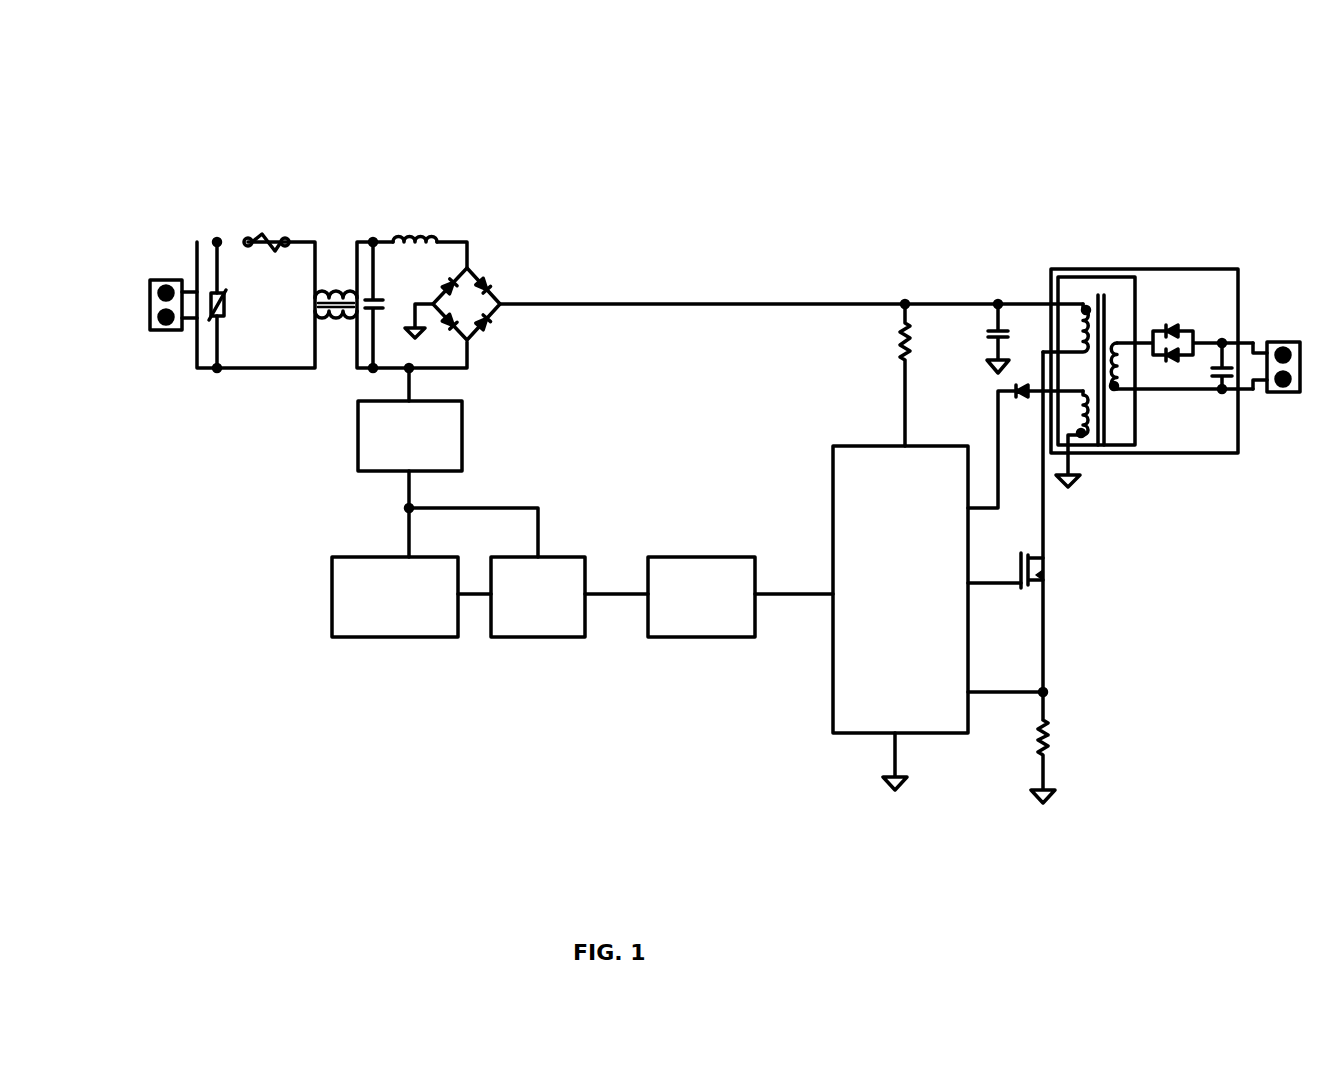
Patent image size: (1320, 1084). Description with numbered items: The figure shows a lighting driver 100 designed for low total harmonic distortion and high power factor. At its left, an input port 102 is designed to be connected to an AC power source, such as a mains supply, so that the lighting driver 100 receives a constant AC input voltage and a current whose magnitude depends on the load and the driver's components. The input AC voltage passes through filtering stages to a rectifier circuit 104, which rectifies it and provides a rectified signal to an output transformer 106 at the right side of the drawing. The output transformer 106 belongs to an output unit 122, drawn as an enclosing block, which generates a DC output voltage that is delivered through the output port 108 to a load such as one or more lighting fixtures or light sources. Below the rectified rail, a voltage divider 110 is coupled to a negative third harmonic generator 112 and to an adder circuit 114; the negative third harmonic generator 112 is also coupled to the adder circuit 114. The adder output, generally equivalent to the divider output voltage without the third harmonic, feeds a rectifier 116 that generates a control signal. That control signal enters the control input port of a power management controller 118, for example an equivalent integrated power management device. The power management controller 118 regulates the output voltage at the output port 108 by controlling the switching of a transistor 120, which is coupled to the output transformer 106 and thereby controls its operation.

The lighting driver 100 is at (180, 120).
The input port 102 is at (178, 282).
The rectifier circuit 104 is at (500, 300).
The output transformer 106 is at (1095, 277).
The output port 108 is at (1292, 342).
The voltage divider 110 is at (358, 452).
The negative third harmonic generator 112 is at (333, 593).
The adder circuit 114 is at (557, 557).
The rectifier 116 is at (735, 558).
The power management controller 118 is at (858, 445).
The transistor 120 is at (1043, 580).
The output unit 122 is at (1185, 272).